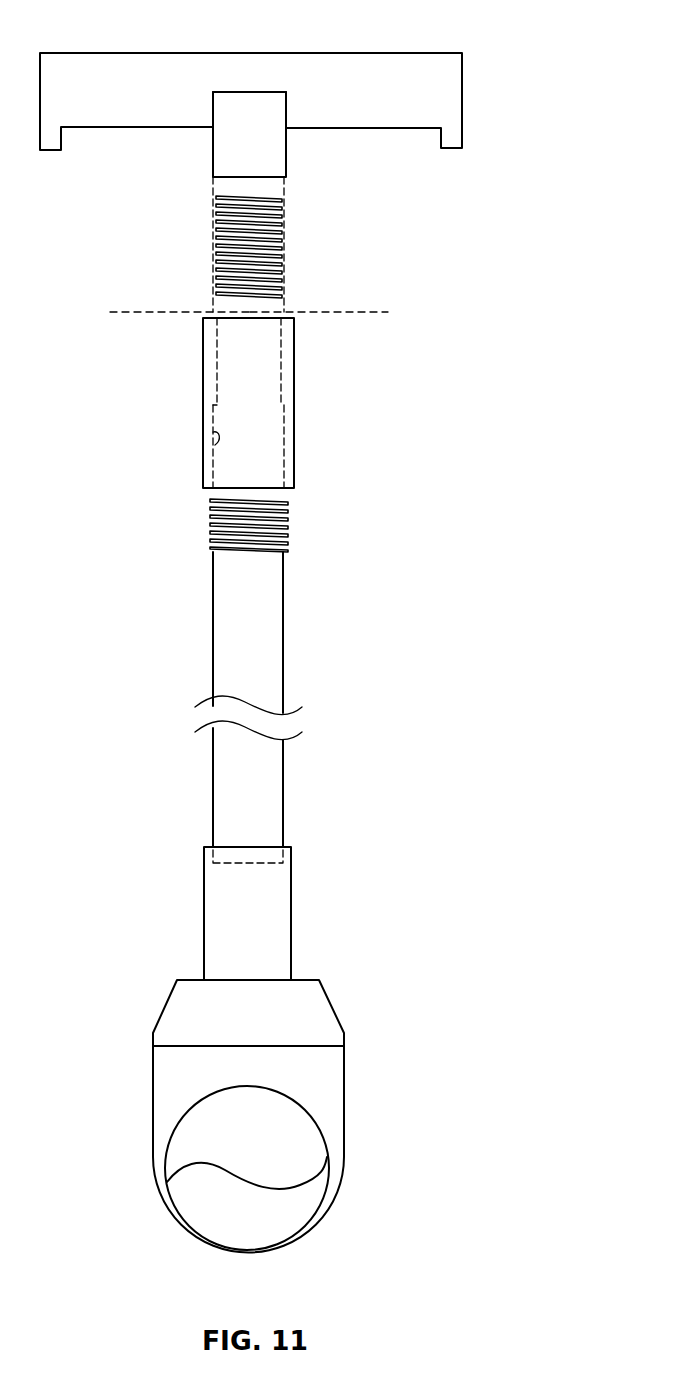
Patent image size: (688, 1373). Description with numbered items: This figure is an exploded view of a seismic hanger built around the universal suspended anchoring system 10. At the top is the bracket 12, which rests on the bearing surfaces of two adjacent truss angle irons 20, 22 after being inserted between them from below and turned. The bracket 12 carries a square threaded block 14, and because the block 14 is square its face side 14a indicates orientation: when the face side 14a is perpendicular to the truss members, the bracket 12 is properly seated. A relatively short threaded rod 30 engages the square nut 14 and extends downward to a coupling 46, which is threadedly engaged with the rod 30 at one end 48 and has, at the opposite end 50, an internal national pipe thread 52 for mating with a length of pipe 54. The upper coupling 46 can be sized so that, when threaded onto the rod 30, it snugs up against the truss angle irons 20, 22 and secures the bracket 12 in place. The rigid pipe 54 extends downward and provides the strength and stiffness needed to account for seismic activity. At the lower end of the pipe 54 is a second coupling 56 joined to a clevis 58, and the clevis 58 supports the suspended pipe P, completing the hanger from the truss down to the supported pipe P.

The universal suspended anchoring system 10 is at (451, 201).
The bracket 12 is at (421, 70).
The square threaded block 14 is at (275, 160).
The face side 14a is at (240, 92).
The threaded rod 30 is at (282, 267).
The first angle iron 20 is at (123, 312).
The second angle iron 22 is at (375, 312).
The coupling 46 is at (295, 378).
The end 48 is at (203, 342).
The opposite end 50 is at (295, 450).
The internal thread 52 is at (213, 445).
The pipe 54 is at (284, 672).
The second coupling 56 is at (204, 913).
The clevis 58 is at (332, 1005).
The pipe P is at (302, 1140).